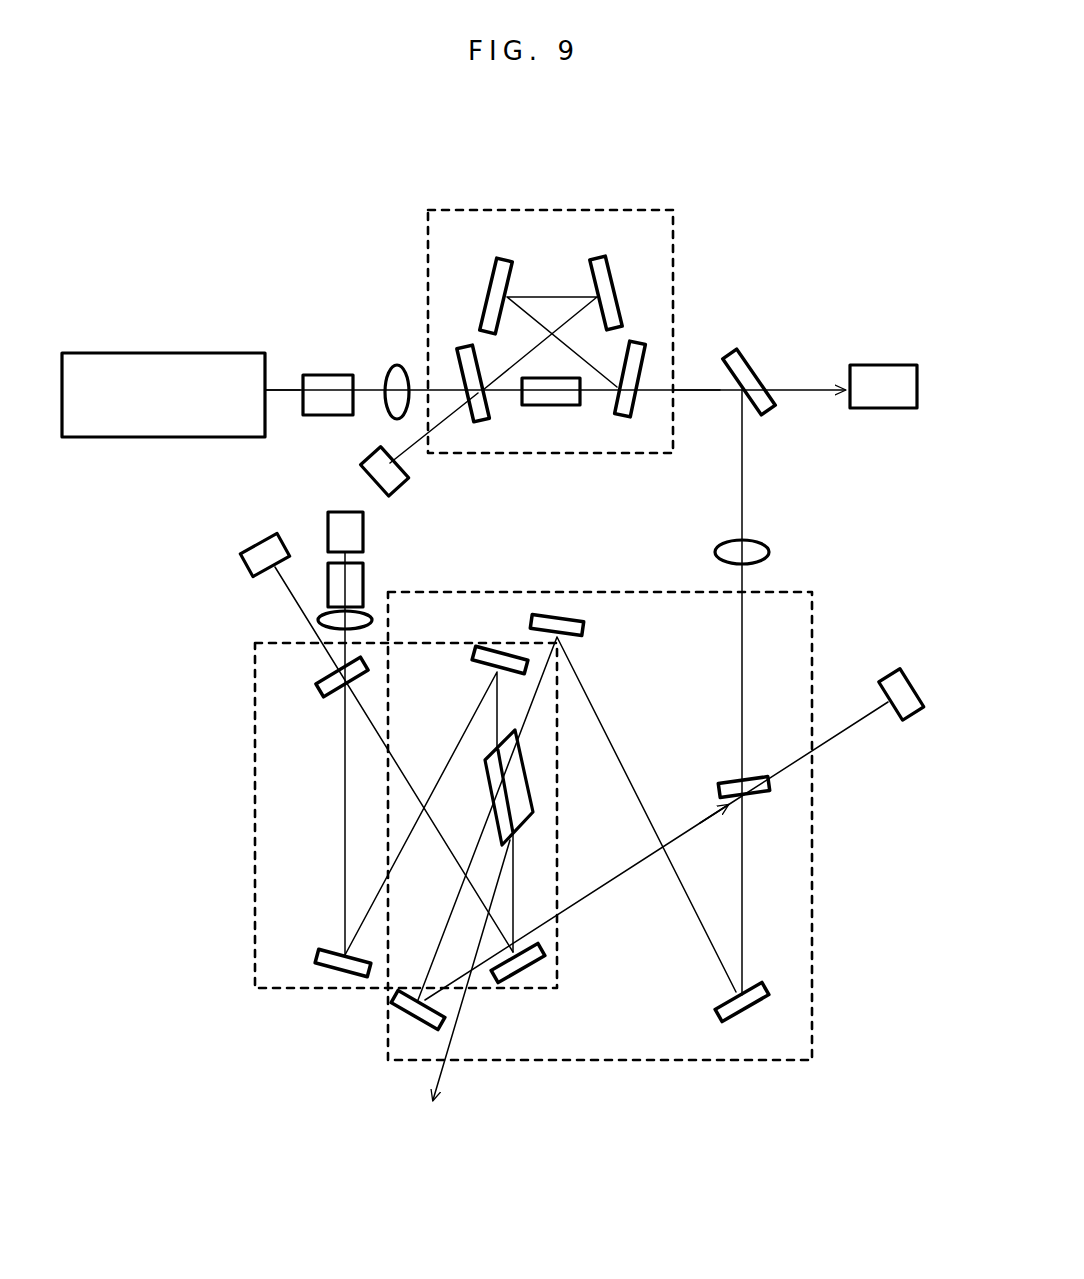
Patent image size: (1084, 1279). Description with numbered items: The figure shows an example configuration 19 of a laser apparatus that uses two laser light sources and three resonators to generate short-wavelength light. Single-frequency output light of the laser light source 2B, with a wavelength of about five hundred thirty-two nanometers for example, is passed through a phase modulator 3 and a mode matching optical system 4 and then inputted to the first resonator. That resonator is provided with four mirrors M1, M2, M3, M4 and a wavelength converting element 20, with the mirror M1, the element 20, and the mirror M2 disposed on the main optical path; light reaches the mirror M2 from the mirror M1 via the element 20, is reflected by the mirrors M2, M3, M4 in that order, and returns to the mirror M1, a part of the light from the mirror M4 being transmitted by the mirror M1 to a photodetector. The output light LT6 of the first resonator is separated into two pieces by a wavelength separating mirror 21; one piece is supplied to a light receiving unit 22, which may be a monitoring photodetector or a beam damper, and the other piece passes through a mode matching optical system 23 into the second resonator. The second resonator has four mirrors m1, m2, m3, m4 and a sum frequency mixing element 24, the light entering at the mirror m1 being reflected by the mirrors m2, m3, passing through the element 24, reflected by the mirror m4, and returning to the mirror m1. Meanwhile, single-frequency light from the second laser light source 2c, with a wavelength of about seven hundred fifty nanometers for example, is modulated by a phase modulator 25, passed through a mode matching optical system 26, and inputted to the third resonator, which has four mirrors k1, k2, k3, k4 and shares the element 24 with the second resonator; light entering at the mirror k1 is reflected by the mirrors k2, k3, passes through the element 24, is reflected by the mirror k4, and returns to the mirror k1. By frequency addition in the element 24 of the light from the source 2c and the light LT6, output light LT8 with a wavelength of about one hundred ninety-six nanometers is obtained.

The example of configuration 19 is at (244, 238).
The laser light source 2B is at (146, 352).
The phase modulator 3 is at (320, 375).
The mode matching optical system 4 is at (396, 366).
The mirror M1 is at (454, 365).
The mirror M2 is at (637, 392).
The mirror M3 is at (478, 283).
The mirror M4 is at (611, 281).
The wavelength converting element 20 is at (553, 407).
The output light of the first resonator LT6 is at (686, 388).
The wavelength separating mirror 21 is at (750, 360).
The light receiving unit 22 is at (882, 365).
The mode matching optical system 23 is at (770, 550).
The laser light source 2c is at (328, 520).
The phase modulator 25 is at (366, 575).
The mode matching optical system 26 is at (372, 614).
The mirror k1 is at (323, 678).
The mirror k2 is at (325, 965).
The mirror k3 is at (482, 662).
The mirror k4 is at (552, 963).
The sum frequency mixing element 24 is at (525, 772).
The mirror m1 is at (764, 797).
The mirror m2 is at (753, 1012).
The mirror m3 is at (578, 618).
The mirror m4 is at (418, 1026).
The output light LT8 is at (460, 990).